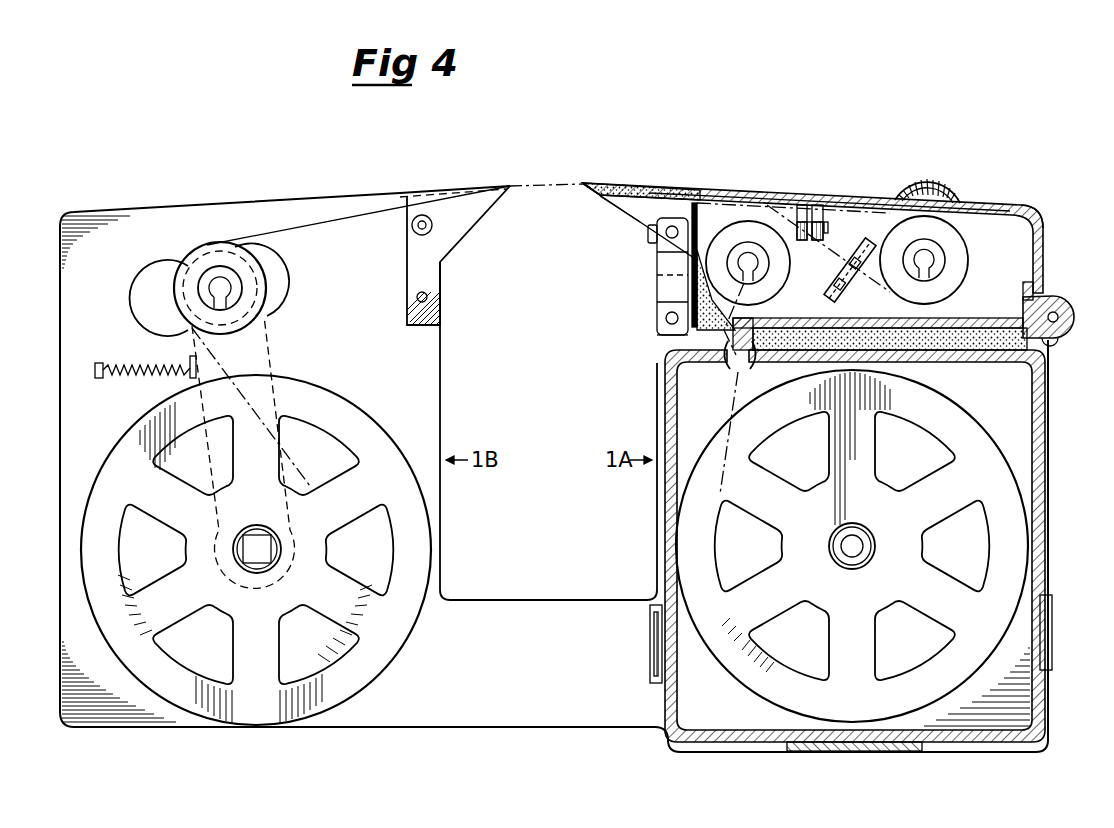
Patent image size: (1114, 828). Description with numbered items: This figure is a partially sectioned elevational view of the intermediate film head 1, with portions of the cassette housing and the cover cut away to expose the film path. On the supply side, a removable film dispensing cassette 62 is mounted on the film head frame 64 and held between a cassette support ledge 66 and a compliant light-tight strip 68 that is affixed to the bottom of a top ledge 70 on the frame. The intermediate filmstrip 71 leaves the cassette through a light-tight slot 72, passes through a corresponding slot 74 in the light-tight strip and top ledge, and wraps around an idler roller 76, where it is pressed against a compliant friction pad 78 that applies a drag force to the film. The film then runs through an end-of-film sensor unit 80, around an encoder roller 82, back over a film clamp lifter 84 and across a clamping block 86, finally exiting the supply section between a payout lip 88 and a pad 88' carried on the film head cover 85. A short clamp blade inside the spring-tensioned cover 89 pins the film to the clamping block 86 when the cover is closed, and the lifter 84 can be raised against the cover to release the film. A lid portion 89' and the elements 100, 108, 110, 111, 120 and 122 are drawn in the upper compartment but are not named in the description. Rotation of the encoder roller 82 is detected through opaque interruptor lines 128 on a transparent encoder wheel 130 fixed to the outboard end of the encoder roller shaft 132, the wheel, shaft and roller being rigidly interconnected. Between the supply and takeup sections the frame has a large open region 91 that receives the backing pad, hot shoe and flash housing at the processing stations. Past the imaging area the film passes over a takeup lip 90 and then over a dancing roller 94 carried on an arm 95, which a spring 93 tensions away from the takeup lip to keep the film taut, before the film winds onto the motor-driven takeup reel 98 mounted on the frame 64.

The film head 1 is at (134, 251).
The film dispensing cassette 62 is at (1041, 420).
The film head frame 64 is at (408, 729).
The cassette support ledge 66 is at (846, 752).
The compliant light-tight strip 68 is at (1052, 344).
The top ledge 70 is at (836, 320).
The intermediate filmstrip 71 is at (337, 220).
The light-tight slot 72 is at (735, 370).
The slot 74 is at (761, 320).
The idler roller 76 is at (752, 221).
The compliant friction pad 78 is at (698, 280).
The end-of-film sensor unit 80 is at (828, 226).
The encoder roller 82 is at (955, 242).
The film clamp lifter 84 is at (816, 205).
The film head cover 85 is at (710, 190).
The clamping block 86 is at (680, 204).
The payout lip 88 is at (630, 222).
The pad 88' is at (615, 223).
The cover 89 is at (1056, 213).
The lid 89' is at (813, 214).
The takeup lip 90 is at (483, 212).
The large region 91 is at (519, 601).
The spring 93 is at (140, 374).
The dancing roller 94 is at (264, 316).
The arm 95 is at (273, 353).
The takeup reel 98 is at (369, 412).
The hinge 100 is at (1058, 306).
The guide member 108 is at (657, 255).
The pin 110 is at (658, 318).
The pin hole 111 is at (666, 326).
The sensor member 120 is at (856, 251).
The sensor slot 122 is at (833, 275).
The opaque interruptor lines 128 is at (905, 178).
The transparent encoder wheel 130 is at (941, 184).
The encoder roller shaft 132 is at (945, 258).